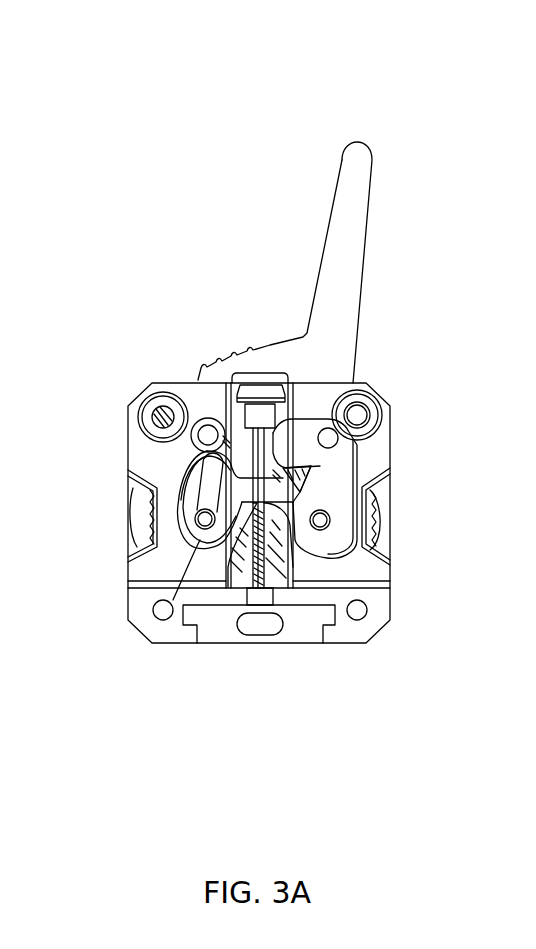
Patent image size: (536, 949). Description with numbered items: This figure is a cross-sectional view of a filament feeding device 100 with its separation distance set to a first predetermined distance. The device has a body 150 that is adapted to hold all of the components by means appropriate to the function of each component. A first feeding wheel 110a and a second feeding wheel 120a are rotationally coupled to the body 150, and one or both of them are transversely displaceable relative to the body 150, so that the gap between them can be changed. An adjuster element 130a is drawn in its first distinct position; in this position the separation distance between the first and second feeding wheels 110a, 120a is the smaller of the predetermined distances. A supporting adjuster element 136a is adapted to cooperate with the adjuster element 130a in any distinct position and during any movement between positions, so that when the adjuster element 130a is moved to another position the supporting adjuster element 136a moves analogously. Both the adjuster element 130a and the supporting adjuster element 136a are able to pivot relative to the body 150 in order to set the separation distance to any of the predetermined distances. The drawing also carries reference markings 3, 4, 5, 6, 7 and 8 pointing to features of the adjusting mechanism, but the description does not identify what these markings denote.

The filament feeding device 100 is at (205, 124).
The adjuster element 130a is at (310, 290).
The body 150 is at (130, 407).
The slot position 3 is at (213, 467).
The slot position 4 is at (203, 477).
The slot position 5 is at (203, 488).
The slot position 6 is at (202, 500).
The slot position 7 is at (197, 510).
The slot position 8 is at (190, 523).
The supporting adjuster element 136a is at (153, 614).
The first feeding wheel 110a is at (252, 553).
The second feeding wheel 120a is at (277, 553).